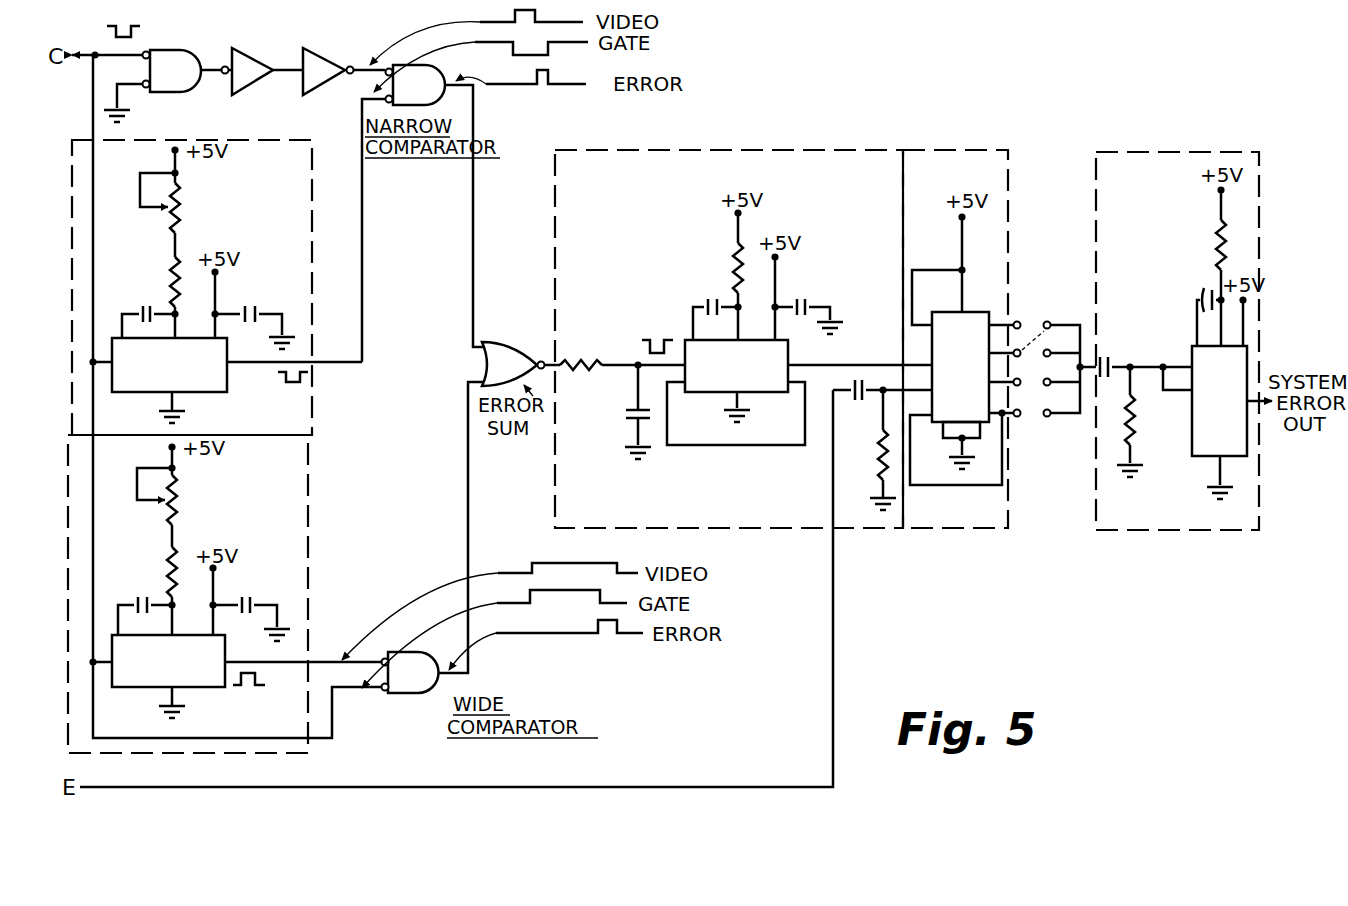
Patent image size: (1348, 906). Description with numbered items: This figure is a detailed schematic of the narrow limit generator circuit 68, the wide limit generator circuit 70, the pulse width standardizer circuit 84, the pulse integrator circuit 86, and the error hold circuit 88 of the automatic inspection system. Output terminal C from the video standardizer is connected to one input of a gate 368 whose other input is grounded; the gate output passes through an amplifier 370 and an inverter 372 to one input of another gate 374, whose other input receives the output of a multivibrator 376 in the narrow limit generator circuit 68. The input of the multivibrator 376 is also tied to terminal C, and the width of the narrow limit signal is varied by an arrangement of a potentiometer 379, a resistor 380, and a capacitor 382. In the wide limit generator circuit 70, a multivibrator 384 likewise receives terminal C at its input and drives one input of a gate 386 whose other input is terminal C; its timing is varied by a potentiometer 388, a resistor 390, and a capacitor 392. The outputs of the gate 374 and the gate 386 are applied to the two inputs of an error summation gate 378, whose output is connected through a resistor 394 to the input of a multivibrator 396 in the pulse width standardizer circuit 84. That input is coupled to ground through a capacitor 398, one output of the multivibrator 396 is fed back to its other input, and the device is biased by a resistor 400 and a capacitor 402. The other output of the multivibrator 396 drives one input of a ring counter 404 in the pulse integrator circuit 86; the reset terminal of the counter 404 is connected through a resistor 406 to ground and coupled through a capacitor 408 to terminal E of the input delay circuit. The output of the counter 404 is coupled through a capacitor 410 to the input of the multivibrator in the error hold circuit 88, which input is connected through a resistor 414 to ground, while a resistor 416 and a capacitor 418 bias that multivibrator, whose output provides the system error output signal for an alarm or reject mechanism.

The gate 368 is at (190, 42).
The amplifier 370 is at (248, 62).
The inverter 372 is at (317, 62).
The gate 374 is at (494, 82).
The multivibrator 376 is at (230, 392).
The error summation gate 378 is at (505, 341).
The potentiometer 379 is at (178, 194).
The resistor 380 is at (170, 278).
The capacitor 382 is at (142, 312).
The multivibrator 384 is at (193, 690).
The gate 386 is at (402, 698).
The potentiometer 388 is at (178, 500).
The resistor 390 is at (168, 572).
The capacitor 392 is at (138, 600).
The resistor 394 is at (590, 358).
The multivibrator 396 is at (765, 398).
The capacitor 398 is at (627, 420).
The resistor 400 is at (728, 272).
The capacitor 402 is at (702, 306).
The ring counter 404 is at (992, 322).
The resistor 406 is at (880, 458).
The capacitor 408 is at (858, 400).
The capacitor 410 is at (1104, 356).
The resistor 414 is at (1136, 408).
The resistor 416 is at (1215, 236).
The capacitor 418 is at (1203, 292).
The narrow limit generator circuit 68 is at (314, 400).
The wide limit generator circuit 70 is at (311, 547).
The pulse width standardizer circuit 84 is at (623, 148).
The pulse integrator circuit 86 is at (946, 148).
The error hold circuit 88 is at (1168, 150).